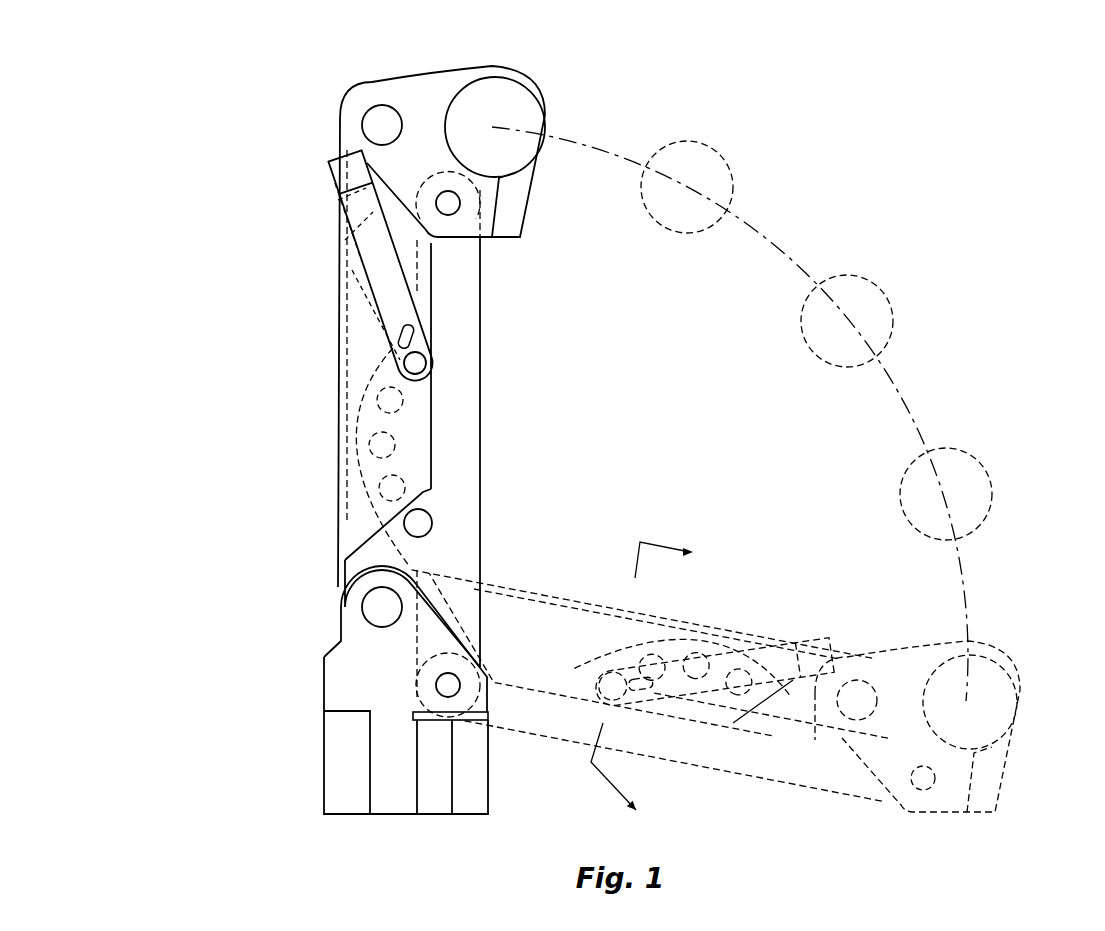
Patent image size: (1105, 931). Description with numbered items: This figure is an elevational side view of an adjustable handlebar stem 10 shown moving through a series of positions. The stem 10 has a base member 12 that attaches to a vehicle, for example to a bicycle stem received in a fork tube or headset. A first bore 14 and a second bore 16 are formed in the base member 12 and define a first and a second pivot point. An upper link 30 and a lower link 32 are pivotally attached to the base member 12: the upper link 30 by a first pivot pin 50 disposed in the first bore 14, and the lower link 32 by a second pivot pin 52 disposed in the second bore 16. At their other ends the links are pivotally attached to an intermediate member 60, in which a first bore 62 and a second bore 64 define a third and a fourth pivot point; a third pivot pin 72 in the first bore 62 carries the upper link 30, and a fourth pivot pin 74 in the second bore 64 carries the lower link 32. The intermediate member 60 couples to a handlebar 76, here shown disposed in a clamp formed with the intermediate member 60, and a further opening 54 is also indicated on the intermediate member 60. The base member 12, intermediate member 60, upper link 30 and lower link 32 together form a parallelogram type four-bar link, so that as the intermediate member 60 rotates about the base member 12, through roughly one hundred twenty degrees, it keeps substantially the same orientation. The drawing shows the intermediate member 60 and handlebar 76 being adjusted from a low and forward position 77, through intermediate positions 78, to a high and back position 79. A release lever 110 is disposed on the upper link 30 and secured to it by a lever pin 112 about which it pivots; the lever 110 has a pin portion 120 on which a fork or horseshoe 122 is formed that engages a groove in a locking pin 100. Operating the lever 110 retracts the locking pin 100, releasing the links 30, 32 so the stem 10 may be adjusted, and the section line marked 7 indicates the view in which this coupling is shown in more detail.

The adjustable handlebar stem 10 is at (248, 417).
The base member 12 is at (350, 680).
The first bore 14 is at (345, 625).
The second bore 16 is at (458, 723).
The upper link 30 is at (345, 545).
The lower link 32 is at (457, 433).
The first pivot pin 50 is at (372, 600).
The second pivot pin 52 is at (440, 690).
The pivot hole 54 is at (453, 212).
The intermediate member 60 is at (423, 93).
The first bore 62 is at (377, 130).
The second bore 64 is at (925, 792).
The third pivot pin 72 is at (332, 152).
The fourth pivot pin 74 is at (458, 196).
The handlebar 76 is at (517, 118).
The low and forward position 77 is at (1010, 597).
The intermediate positions 78 is at (717, 172).
The high and back position 79 is at (516, 56).
The locking pin 100 is at (417, 365).
The release lever 110 is at (340, 210).
The lever pin 112 is at (333, 258).
The pin portion 120 is at (393, 295).
The horseshoe 122 is at (415, 338).
The section line 7- 7 is at (651, 684).